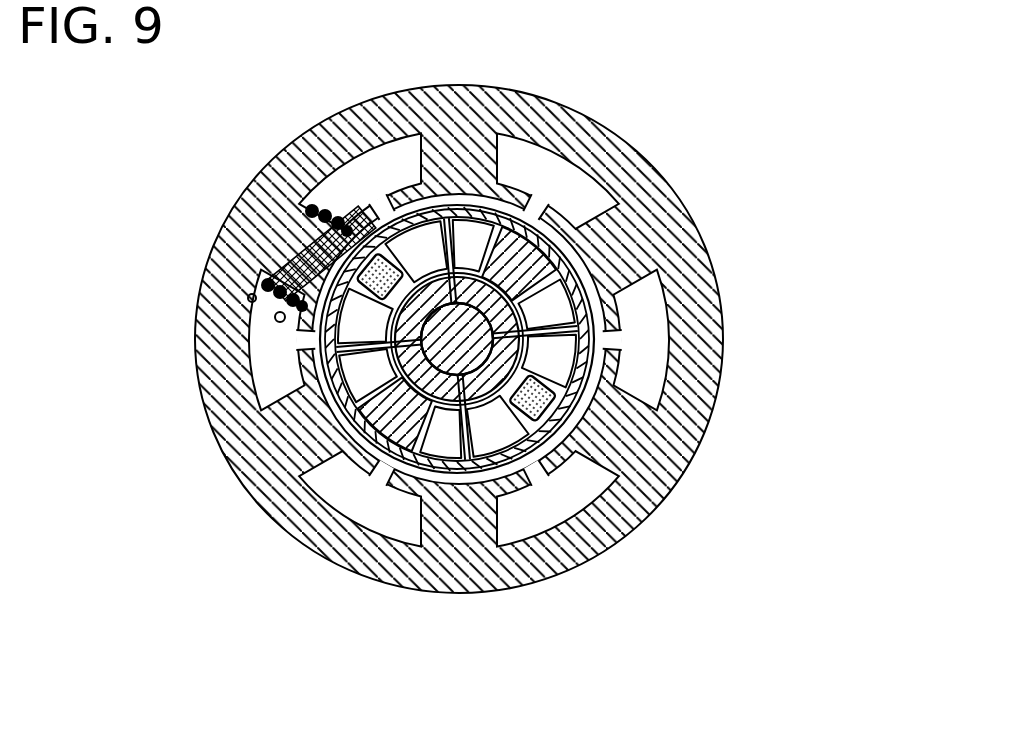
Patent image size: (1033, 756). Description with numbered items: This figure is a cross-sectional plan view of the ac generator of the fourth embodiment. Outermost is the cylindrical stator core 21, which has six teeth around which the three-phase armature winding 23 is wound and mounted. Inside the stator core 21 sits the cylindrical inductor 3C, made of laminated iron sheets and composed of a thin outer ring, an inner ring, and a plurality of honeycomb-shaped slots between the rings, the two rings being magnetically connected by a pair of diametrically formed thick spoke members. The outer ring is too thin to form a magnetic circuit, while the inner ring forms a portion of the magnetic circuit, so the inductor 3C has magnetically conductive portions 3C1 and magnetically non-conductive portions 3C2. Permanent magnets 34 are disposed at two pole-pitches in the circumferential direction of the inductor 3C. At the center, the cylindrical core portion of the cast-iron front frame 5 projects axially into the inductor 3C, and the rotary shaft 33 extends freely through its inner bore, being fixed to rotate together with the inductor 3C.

The stator core 21 is at (243, 262).
The armature winding 23 is at (298, 222).
The inductor 3C is at (387, 403).
The magnetically conductive portions 3C1 is at (383, 448).
The magnetically non-conductive portions 3C2 is at (445, 450).
The permanent magnets 34 is at (553, 398).
The front frame 5 is at (490, 298).
The rotary shaft 33 is at (497, 335).